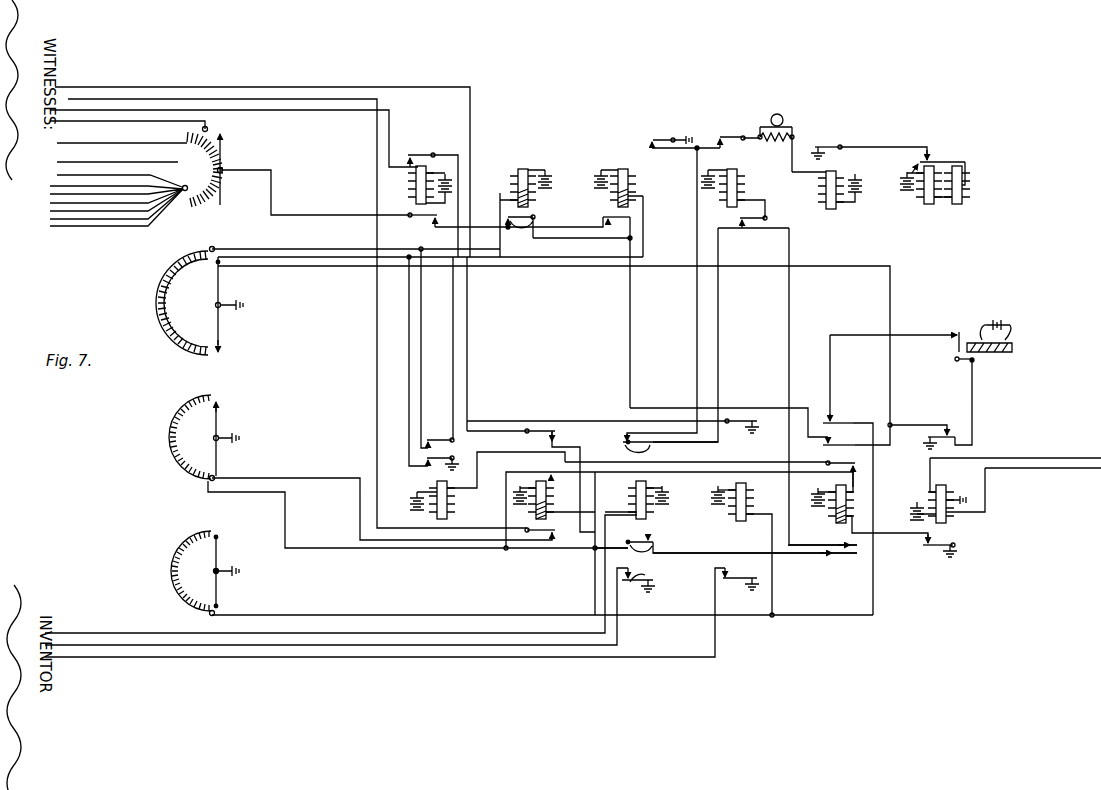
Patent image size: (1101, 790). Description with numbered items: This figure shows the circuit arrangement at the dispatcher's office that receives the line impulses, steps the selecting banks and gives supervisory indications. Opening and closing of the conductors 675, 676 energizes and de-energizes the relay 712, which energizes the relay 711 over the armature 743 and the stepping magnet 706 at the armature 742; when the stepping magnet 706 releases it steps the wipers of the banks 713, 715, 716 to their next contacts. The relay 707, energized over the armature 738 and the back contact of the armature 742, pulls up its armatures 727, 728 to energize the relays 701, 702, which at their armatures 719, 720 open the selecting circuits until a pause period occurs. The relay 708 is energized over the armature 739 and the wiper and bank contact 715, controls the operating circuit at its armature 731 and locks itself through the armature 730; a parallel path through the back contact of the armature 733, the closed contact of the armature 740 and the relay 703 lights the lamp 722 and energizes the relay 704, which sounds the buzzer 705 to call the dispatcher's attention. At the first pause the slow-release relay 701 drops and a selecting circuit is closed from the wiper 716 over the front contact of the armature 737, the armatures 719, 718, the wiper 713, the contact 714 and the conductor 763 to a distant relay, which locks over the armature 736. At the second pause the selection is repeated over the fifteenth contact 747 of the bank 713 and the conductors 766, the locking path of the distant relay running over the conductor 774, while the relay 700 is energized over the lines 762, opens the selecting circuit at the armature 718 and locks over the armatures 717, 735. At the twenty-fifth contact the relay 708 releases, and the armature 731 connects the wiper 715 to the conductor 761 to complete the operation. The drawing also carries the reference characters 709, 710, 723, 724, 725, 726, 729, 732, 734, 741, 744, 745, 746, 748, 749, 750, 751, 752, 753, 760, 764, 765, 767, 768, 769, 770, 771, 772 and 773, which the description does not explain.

The relay 700 is at (414, 186).
The slow-release relay 701 is at (518, 186).
The relay 702 is at (618, 197).
The relay 703 is at (727, 197).
The relay 704 is at (822, 189).
The buzzer 705 is at (925, 196).
The stepping magnet 706 is at (938, 349).
The relay 707 is at (437, 497).
The relay 708 is at (536, 510).
The relay 709 is at (636, 496).
The relay 710 is at (736, 509).
The relay 711 is at (836, 513).
The relay 712 is at (934, 495).
The bank 713 is at (224, 168).
The contact 714 is at (224, 297).
The bank contact 715 is at (221, 418).
The wiper 716 is at (223, 562).
The armature 717 is at (428, 153).
The armature 718 is at (418, 222).
The armature 719 is at (536, 217).
The armature 720 is at (604, 217).
The lamp 722 is at (786, 117).
The contact 723 is at (738, 232).
The contact 724 is at (832, 147).
The contact 725 is at (938, 161).
The contact 726 is at (662, 138).
The armature 727 is at (442, 432).
The armature 728 is at (450, 458).
The contact 729 is at (550, 428).
The armature 730 is at (553, 470).
The armature 731 is at (541, 533).
The contact 732 is at (622, 441).
The armature 733 is at (654, 545).
The contact 734 is at (654, 578).
The armature 735 is at (750, 418).
The armature 736 is at (740, 574).
The armature 737 is at (857, 414).
The armature 738 is at (838, 444).
The armature 739 is at (856, 462).
The armature 740 is at (828, 557).
The contact 741 is at (955, 359).
The armature 742 is at (942, 434).
The armature 743 is at (926, 552).
The contact 744 is at (208, 128).
The contact bank 745 is at (205, 169).
The contact 746 is at (183, 142).
The contact 747 is at (183, 187).
The contact 748 is at (182, 187).
The contact 749 is at (181, 192).
The contact 750 is at (185, 198).
The contact 751 is at (188, 205).
The hub contact 752 is at (189, 189).
The contact 753 is at (218, 248).
The conductor 760 is at (55, 87).
The conductor 761 is at (68, 99).
The lines 762 is at (88, 110).
The conductor 763 is at (96, 121).
The conductor 764 is at (170, 84).
The conductor 765 is at (57, 143).
The conductors 766 is at (57, 162).
The conductor 767 is at (119, 174).
The conductor 768 is at (50, 186).
The conductor 769 is at (50, 203).
The conductor 770 is at (50, 211).
The conductor 771 is at (79, 219).
The conductor 772 is at (58, 633).
The conductor 773 is at (100, 645).
The conductor 774 is at (97, 657).
The conductor 675 is at (1044, 458).
The conductor 676 is at (1088, 468).